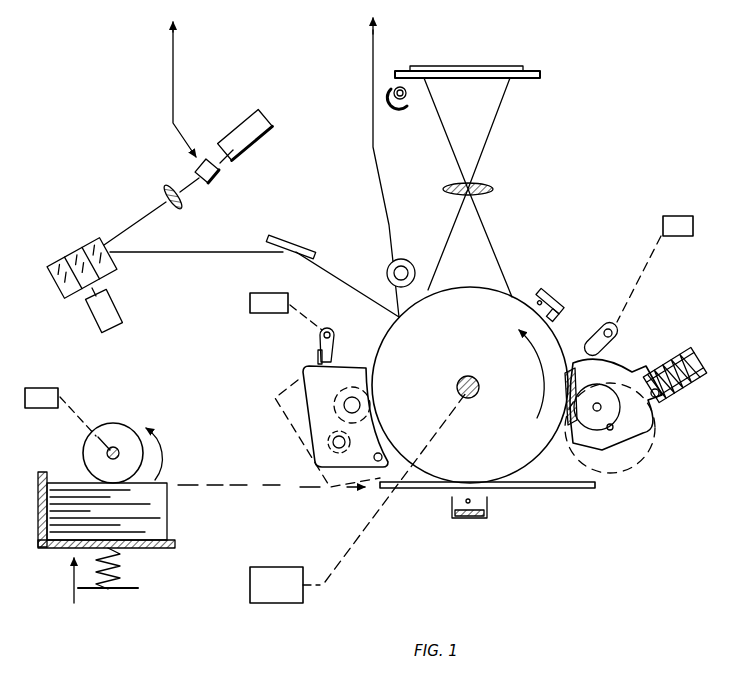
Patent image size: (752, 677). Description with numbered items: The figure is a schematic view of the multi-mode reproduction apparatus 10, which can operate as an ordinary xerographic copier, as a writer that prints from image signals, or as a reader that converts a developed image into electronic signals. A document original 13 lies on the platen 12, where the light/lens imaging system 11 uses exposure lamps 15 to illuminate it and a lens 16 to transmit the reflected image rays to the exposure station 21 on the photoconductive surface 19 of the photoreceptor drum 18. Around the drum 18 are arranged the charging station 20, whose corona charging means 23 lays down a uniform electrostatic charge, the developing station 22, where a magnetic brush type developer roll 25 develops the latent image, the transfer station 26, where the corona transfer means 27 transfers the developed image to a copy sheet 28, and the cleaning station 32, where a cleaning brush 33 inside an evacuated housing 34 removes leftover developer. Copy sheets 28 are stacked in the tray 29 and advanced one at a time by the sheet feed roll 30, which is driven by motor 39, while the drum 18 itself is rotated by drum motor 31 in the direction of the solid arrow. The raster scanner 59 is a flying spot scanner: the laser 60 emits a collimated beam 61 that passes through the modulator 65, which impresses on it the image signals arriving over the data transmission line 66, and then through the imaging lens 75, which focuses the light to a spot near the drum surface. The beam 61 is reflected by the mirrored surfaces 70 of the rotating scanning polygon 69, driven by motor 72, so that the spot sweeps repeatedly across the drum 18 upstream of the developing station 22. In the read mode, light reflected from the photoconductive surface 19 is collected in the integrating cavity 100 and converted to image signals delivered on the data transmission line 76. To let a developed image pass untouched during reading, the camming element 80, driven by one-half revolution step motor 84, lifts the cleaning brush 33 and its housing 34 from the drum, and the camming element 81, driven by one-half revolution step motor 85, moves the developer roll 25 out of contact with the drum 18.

The multi-mode reproduction apparatus 10 is at (594, 166).
The light/lens imaging system 11 is at (508, 158).
The platen 12 is at (535, 79).
The document original 13 is at (482, 65).
The exposure lamp 15 is at (406, 110).
The lens 16 is at (496, 188).
The photoreceptor drum 18 is at (416, 478).
The photoconductive surface 19 is at (518, 292).
The charging station 20 is at (570, 331).
The exposure station 21 is at (472, 274).
The developing station 22 is at (298, 458).
The corona charging means 23 is at (556, 290).
The developer roll 25 is at (362, 402).
The transfer station 26 is at (478, 462).
The corona transfer means 27 is at (490, 514).
The copy sheet 28 is at (168, 520).
The tray 29 is at (172, 546).
The sheet feed roll 30 is at (132, 424).
The drum motor 31 is at (292, 566).
The cleaning station 32 is at (552, 413).
The cleaning brush 33 is at (650, 455).
The evacuated housing 34 is at (496, 470).
The feed roll motor 39 is at (62, 394).
The raster scanner 59 is at (208, 243).
The laser 60 is at (276, 130).
The collimated beam 61 is at (246, 256).
The modulator 65 is at (228, 177).
The data transmission line 66 is at (172, 128).
The rotating scanning polygon 69 is at (93, 238).
The mirrored surfaces 70 is at (116, 278).
The polygon motor 72 is at (114, 330).
The imaging lens 75 is at (162, 192).
The data transmission line 76 is at (372, 125).
The camming element 80 is at (616, 330).
The camming element 81 is at (318, 341).
The one-half revolution step motor 84 is at (690, 238).
The one-half revolution step motor 85 is at (284, 286).
The integrating cavity 100 is at (384, 266).